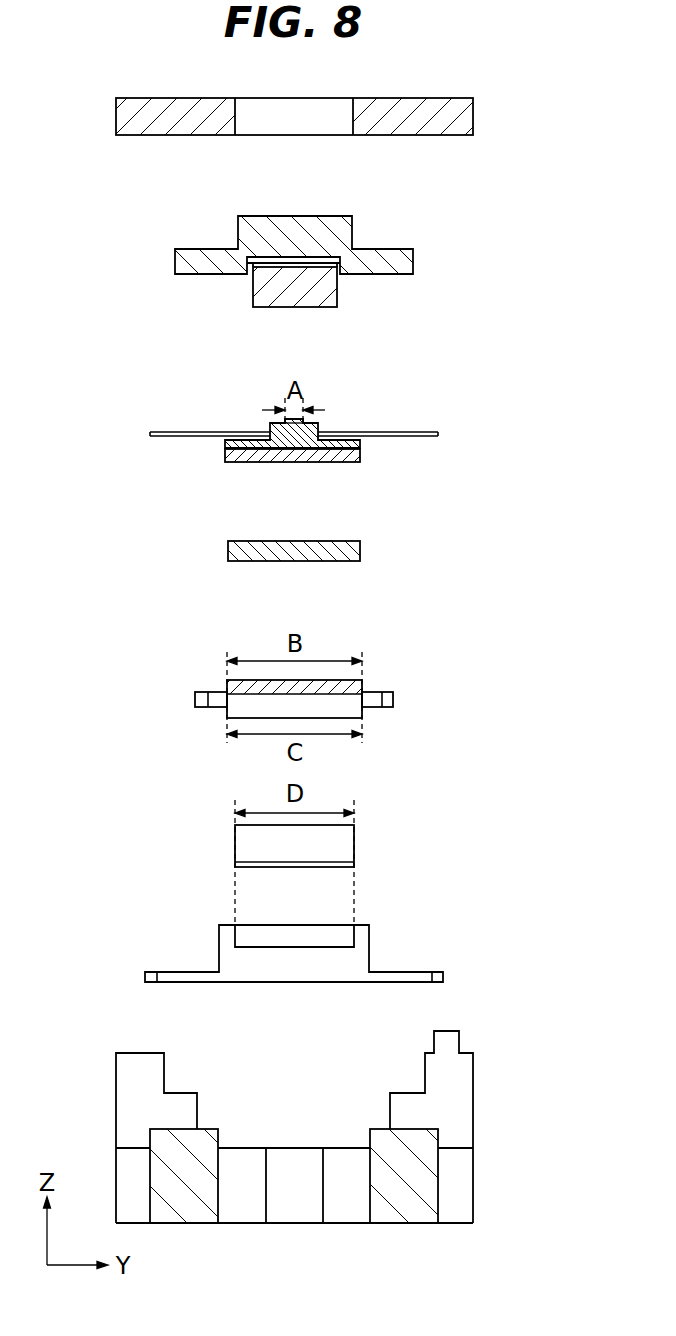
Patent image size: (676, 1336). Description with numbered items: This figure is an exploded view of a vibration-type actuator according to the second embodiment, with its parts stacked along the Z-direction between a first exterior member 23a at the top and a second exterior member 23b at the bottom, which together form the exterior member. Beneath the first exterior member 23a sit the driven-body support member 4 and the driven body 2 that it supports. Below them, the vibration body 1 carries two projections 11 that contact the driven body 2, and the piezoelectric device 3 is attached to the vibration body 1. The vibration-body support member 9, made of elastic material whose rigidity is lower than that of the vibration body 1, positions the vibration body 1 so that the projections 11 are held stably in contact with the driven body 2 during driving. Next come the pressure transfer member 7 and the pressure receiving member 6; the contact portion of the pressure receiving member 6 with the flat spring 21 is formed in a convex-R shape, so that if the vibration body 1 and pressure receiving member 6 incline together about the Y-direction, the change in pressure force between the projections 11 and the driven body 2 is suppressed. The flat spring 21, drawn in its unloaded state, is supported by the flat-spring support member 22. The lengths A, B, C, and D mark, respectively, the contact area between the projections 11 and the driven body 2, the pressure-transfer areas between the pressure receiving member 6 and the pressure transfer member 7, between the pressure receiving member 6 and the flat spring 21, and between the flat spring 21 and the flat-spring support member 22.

The vibration body 1 is at (360, 441).
The driven body 2 is at (332, 293).
The piezoelectric device 3 is at (362, 456).
The driven-body support member 4 is at (405, 263).
The pressure receiving member 6 is at (352, 712).
The pressure transfer member 7 is at (358, 549).
The vibration-body support member 9 is at (192, 432).
The projections 11 is at (318, 423).
The flat spring 21 is at (348, 842).
The flat-spring support member 22 is at (370, 942).
The first exterior member 23a is at (466, 116).
The second exterior member 23b is at (467, 1097).